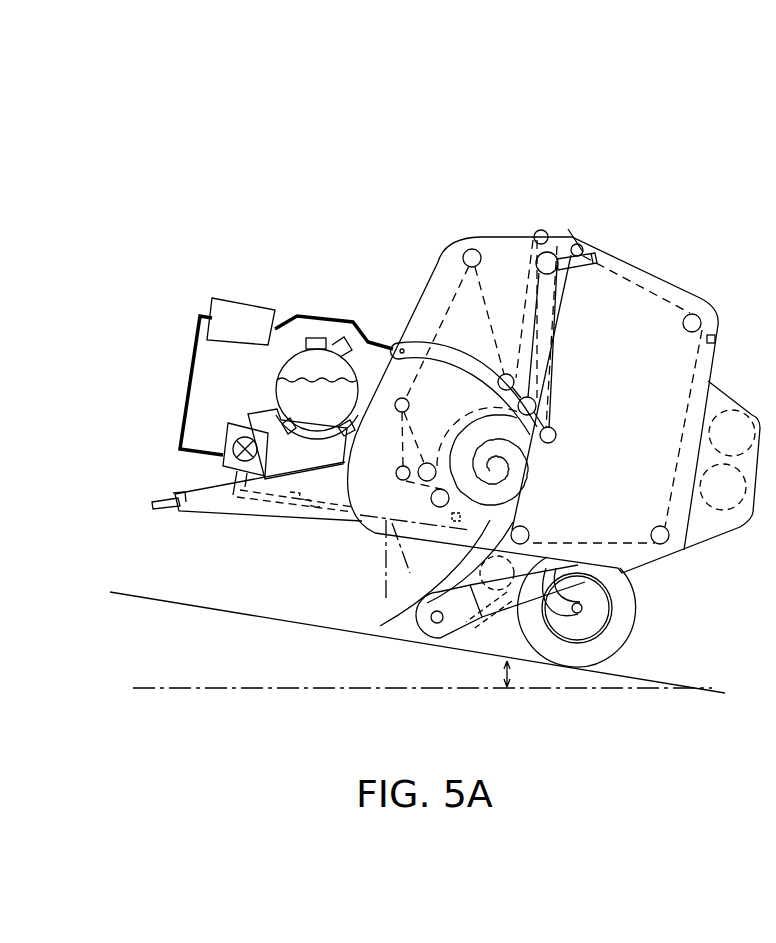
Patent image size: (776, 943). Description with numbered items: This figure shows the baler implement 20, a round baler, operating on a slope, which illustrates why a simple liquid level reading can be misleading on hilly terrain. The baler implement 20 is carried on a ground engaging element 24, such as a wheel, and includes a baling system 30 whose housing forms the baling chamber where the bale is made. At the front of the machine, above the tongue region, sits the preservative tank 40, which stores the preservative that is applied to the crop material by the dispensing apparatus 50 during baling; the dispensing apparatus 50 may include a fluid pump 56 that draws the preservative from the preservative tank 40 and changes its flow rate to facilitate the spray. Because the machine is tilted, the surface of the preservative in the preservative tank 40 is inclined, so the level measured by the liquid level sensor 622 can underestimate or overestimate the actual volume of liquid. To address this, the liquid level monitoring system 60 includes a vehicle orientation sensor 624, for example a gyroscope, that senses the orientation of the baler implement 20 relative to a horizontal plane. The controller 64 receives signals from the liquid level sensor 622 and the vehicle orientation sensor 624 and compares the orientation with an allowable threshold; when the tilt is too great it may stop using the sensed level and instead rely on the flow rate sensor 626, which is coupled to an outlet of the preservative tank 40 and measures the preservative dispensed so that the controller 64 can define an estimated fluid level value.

The baler implement 20 is at (617, 105).
The baling system 30 is at (597, 213).
The ground engaging element 24 is at (622, 630).
The dispensing apparatus 50 is at (363, 533).
The liquid level monitoring system 60 is at (237, 257).
The controller 64 is at (232, 317).
The liquid level sensor 622 is at (318, 338).
The vehicle orientation sensor 624 is at (332, 323).
The preservative tank 40 is at (300, 367).
The fluid pump 56 is at (230, 466).
The flow rate sensor 626 is at (293, 518).